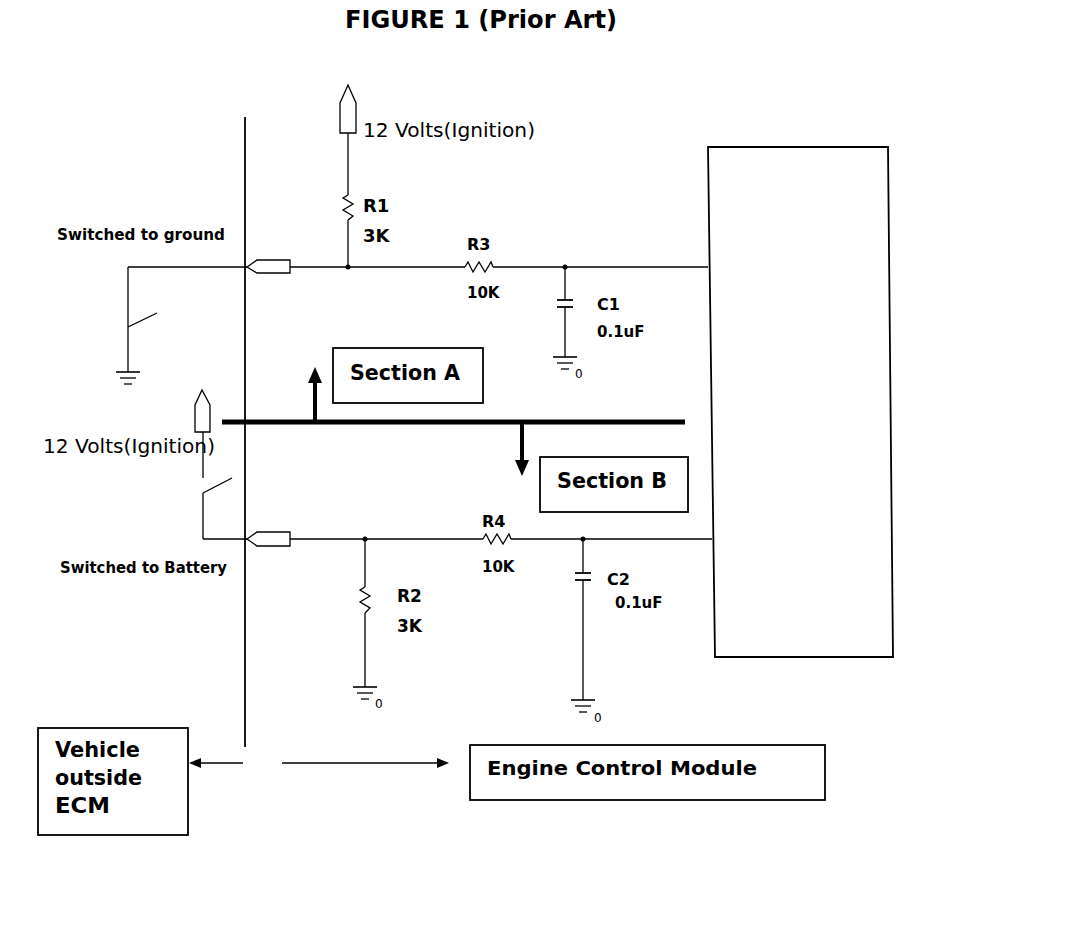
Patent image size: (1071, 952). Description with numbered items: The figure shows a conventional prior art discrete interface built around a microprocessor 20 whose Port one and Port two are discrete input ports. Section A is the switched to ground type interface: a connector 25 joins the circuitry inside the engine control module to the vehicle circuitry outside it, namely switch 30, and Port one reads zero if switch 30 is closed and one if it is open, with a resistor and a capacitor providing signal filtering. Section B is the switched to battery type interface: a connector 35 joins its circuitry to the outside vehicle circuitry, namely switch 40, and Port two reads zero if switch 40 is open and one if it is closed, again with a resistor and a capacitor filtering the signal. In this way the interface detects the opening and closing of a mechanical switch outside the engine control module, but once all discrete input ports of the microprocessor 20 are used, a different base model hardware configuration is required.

The microprocessor 20 is at (855, 330).
The connector 25 is at (276, 240).
The switch 30 is at (115, 332).
The connector 35 is at (283, 575).
The switch 40 is at (190, 488).